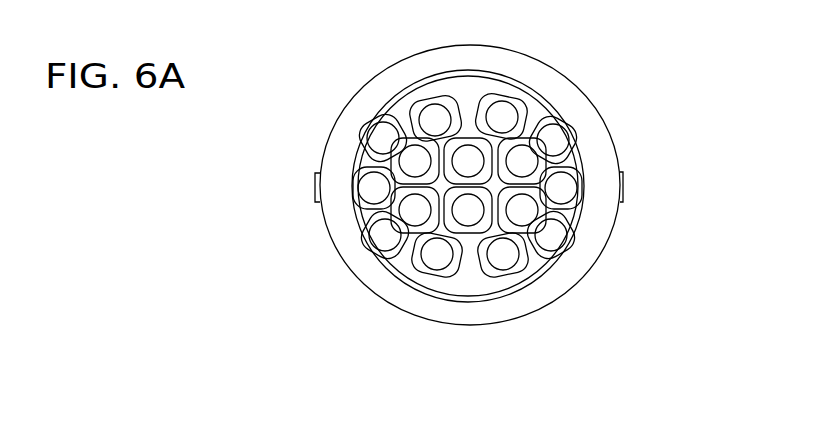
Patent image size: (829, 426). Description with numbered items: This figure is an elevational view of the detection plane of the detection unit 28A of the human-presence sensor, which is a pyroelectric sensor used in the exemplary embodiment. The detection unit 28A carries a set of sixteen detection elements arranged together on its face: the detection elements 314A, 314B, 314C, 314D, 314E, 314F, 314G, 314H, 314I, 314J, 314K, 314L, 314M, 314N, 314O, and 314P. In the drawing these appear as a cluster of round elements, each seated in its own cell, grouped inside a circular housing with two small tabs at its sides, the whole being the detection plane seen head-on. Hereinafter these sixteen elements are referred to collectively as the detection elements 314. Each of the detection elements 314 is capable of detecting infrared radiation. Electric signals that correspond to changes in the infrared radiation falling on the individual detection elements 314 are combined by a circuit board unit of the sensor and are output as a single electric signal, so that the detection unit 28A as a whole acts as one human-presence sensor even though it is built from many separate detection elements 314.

The detection unit 28A is at (348, 294).
The detection elements 314 is at (483, 295).
The detection element 314A is at (385, 235).
The detection element 314B is at (437, 258).
The detection element 314C is at (506, 260).
The detection element 314D is at (553, 235).
The detection element 314E is at (372, 190).
The detection element 314F is at (415, 208).
The detection element 314G is at (412, 235).
The detection element 314H is at (545, 263).
The detection element 314I is at (570, 192).
The detection element 314J is at (382, 140).
The detection element 314K is at (413, 157).
The detection element 314L is at (523, 125).
The detection element 314M is at (522, 163).
The detection element 314N is at (555, 143).
The detection element 314O is at (433, 118).
The detection element 314P is at (501, 115).